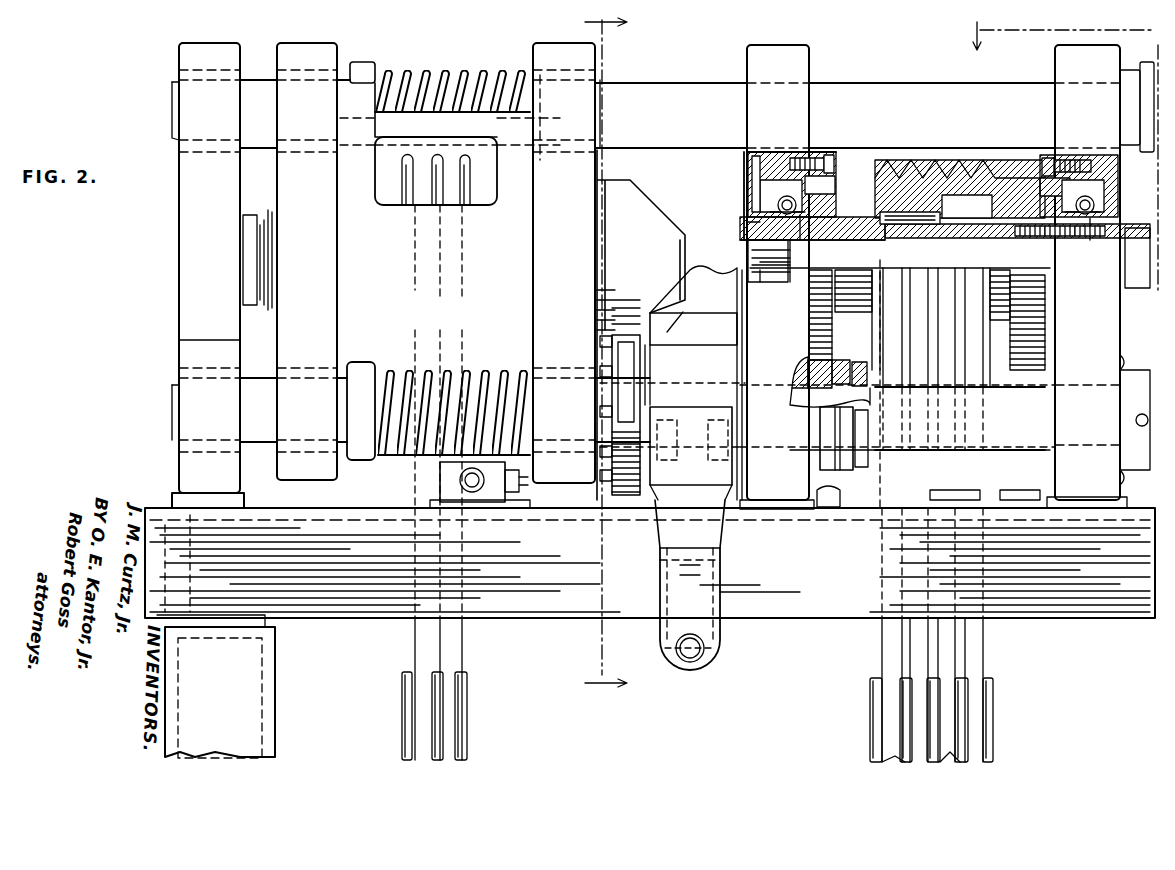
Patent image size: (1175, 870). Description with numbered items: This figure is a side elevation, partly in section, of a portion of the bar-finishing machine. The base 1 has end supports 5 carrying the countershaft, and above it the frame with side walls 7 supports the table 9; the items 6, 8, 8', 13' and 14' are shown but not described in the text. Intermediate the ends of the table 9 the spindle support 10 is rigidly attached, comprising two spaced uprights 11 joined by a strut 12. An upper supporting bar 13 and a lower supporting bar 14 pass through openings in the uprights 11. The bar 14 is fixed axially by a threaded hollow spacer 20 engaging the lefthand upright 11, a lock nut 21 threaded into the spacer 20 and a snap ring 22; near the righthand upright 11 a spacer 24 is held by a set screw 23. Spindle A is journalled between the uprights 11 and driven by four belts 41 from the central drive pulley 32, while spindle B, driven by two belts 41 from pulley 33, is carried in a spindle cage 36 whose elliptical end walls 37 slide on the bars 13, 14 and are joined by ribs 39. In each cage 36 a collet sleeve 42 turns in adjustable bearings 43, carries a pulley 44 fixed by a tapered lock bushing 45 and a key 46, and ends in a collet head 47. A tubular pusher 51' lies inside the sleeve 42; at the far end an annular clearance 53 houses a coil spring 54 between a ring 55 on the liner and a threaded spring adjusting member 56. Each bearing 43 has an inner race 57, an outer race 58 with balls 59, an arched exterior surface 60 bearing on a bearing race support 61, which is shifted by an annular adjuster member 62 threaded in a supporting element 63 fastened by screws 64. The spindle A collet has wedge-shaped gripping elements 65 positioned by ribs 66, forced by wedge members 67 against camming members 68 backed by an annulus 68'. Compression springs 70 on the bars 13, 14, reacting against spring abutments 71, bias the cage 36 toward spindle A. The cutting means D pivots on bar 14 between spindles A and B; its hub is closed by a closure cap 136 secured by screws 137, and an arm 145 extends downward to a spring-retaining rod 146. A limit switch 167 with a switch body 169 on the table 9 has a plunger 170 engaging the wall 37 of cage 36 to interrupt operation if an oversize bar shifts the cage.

The base 1 is at (650, 563).
The end supports 5 is at (275, 662).
The ledge 6 is at (345, 612).
The side walls 7 is at (358, 362).
The post 8 is at (184, 568).
The upright post 8' is at (195, 275).
The table 9 is at (588, 528).
The spindle support 10 is at (787, 505).
The upstanding supports 11 is at (785, 45).
The strut 12 is at (880, 500).
The supporting bar 13 is at (647, 97).
The shaft end 13' is at (158, 65).
The supporting bar 14 is at (647, 414).
The shaft end 14' is at (150, 428).
The spacer 20 is at (835, 364).
The lock nut 21 is at (855, 360).
The snap ring 22 is at (858, 458).
The set screw 23 is at (1142, 426).
The spacer 24 is at (1138, 385).
The drive pulley 32 is at (993, 724).
The drive pulley 33 is at (470, 712).
The spindle cage 36 is at (360, 250).
The end walls 37 is at (303, 43).
The ribs 39 is at (384, 190).
The belts 41 is at (448, 641).
The collet sleeve 42 is at (848, 242).
The adjustable bearings 43 is at (778, 200).
The pulley 44 is at (434, 160).
The tapered lock bushing 45 is at (942, 209).
The key 46 is at (262, 222).
The collet head 47 is at (648, 200).
The tubular pusher 51' is at (905, 239).
The annular clearance 53 is at (1012, 240).
The coil spring 54 is at (1082, 240).
The ring 55 is at (1040, 242).
The spring adjusting member 56 is at (243, 233).
The inner race 57 is at (272, 210).
The outer race 58 is at (748, 180).
The balls 59 is at (765, 212).
The exterior annular surface 60 is at (775, 160).
The bearing race support 61 is at (785, 165).
The annular adjuster member 62 is at (836, 180).
The annular supporting element 63 is at (830, 160).
The screw fasteners 64 is at (812, 160).
The gripping elements 65 is at (767, 281).
The ribs 66 is at (752, 266).
The wedge member 67 is at (794, 266).
The camming member 68 is at (744, 258).
The annulus 68' is at (730, 229).
The compression springs 70 is at (450, 74).
The spring abutment 71 is at (360, 62).
The closure cap 136 is at (632, 368).
The screw fasteners 137 is at (600, 447).
The arm 145 is at (705, 588).
The spring-retaining rod 146 is at (692, 660).
The limit switch 167 is at (480, 490).
The switch body 169 is at (462, 502).
The plunger 170 is at (522, 482).
The spindle A is at (954, 162).
The spindle B is at (378, 112).
The bar cutting means D is at (649, 538).